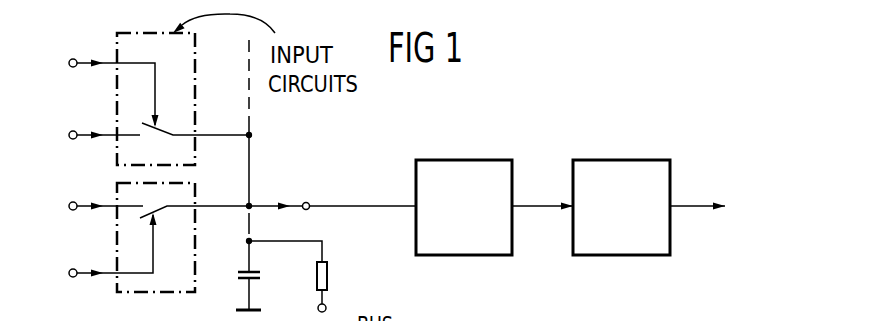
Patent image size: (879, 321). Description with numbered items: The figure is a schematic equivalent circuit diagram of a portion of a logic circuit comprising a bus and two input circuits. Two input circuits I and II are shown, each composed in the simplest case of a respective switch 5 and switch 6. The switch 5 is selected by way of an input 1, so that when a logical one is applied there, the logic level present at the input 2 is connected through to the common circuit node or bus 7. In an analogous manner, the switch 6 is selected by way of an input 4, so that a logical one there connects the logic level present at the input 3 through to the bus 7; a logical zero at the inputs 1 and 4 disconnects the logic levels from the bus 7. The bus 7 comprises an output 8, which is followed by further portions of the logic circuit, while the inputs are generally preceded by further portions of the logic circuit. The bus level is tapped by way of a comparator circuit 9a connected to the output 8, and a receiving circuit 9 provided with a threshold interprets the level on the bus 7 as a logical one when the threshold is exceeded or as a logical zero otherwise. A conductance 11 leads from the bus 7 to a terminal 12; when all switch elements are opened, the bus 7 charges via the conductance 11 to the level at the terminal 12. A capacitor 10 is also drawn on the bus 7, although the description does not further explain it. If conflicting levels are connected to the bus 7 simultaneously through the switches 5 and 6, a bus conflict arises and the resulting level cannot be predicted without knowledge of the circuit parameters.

The input 1 is at (107, 87).
The input 2 is at (97, 135).
The input 3 is at (99, 206).
The input 4 is at (106, 250).
The switch 5 is at (195, 143).
The switch 6 is at (221, 221).
The bus 7 is at (256, 156).
The output 8 is at (358, 192).
The receiving circuit 9 is at (453, 160).
The comparator circuit 9a is at (693, 135).
The capacitor 10 is at (257, 286).
The conductance 11 is at (296, 272).
The terminal 12 is at (311, 302).
The input circuit I is at (189, 47).
The input circuit II is at (189, 277).